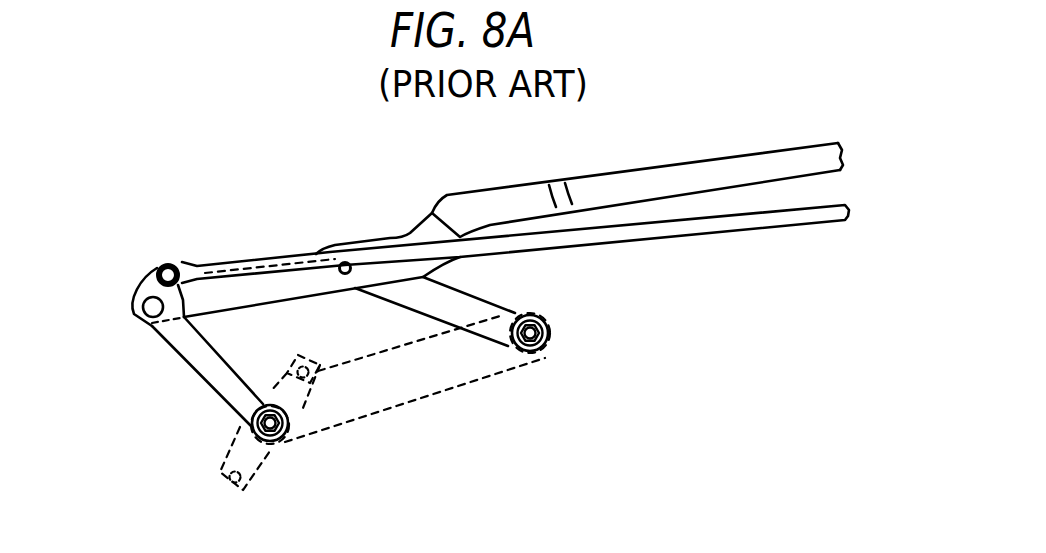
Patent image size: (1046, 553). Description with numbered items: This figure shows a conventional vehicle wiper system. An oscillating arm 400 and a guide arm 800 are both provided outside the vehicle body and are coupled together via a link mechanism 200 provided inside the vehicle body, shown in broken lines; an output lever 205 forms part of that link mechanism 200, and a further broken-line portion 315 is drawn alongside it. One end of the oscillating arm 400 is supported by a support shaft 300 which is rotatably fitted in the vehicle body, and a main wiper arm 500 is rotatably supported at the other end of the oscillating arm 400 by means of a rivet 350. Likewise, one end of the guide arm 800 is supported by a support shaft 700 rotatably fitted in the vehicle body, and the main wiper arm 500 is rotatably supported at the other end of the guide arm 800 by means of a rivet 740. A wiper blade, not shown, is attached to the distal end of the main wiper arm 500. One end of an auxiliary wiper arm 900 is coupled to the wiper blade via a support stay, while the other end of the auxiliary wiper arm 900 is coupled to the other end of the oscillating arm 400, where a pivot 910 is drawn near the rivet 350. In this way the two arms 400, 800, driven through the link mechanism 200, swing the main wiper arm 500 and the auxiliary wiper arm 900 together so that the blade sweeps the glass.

The main wiper arm 500 is at (515, 196).
The auxiliary wiper arm 900 is at (222, 258).
The pivot pin 910 is at (160, 262).
The rivet 740 is at (349, 262).
The guide arm 800 is at (497, 302).
The support shaft 700 is at (550, 322).
The rivet 350 is at (153, 306).
The oscillating arm 400 is at (200, 368).
The support shaft 300 is at (283, 428).
The link mechanism 200 is at (348, 355).
The plate edge 315 is at (438, 383).
The output lever 205 is at (260, 462).